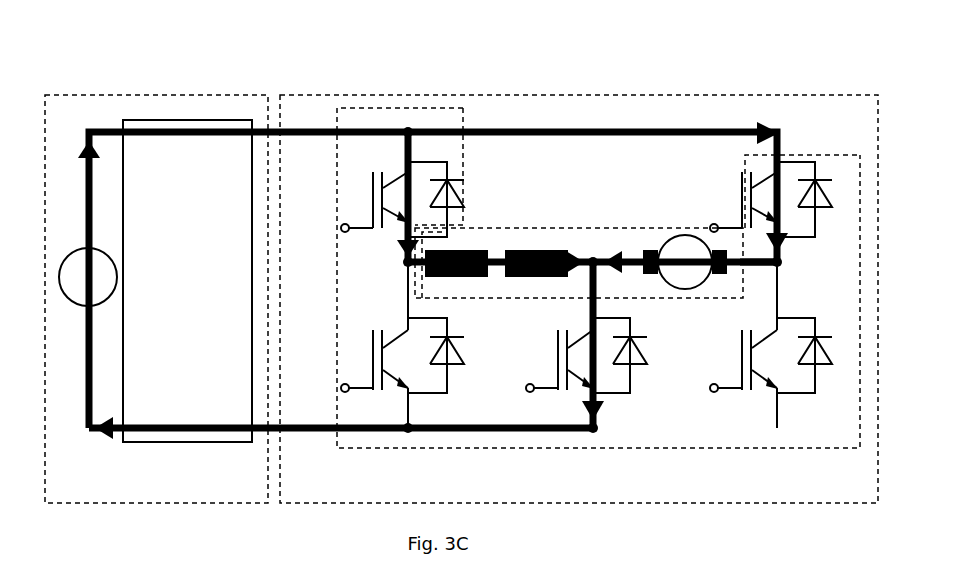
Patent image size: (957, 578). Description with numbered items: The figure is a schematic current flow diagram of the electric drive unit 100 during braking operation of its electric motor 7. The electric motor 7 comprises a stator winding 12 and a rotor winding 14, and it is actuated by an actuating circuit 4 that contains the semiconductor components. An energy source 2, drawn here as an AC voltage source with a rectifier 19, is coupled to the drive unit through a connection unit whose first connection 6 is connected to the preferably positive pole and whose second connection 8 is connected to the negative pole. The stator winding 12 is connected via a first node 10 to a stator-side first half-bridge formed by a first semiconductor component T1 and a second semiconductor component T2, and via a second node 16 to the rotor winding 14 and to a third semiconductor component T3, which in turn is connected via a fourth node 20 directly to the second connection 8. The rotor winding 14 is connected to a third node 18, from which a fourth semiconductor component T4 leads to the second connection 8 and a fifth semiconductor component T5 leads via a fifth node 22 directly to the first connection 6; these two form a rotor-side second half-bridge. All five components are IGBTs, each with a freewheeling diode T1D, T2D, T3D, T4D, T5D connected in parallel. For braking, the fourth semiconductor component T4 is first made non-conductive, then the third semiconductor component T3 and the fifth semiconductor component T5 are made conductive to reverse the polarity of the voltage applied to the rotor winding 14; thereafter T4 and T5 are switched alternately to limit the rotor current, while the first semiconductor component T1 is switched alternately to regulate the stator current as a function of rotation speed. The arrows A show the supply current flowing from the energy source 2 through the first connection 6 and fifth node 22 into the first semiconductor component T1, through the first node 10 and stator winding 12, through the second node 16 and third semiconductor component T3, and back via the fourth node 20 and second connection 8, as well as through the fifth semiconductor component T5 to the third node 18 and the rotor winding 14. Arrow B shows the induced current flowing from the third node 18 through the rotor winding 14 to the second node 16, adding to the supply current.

The energy source 2 is at (95, 95).
The rectifier 19 is at (190, 120).
The first connection 6 is at (317, 132).
The actuating circuit 4 is at (375, 108).
The fifth node 22 is at (410, 128).
The electric drive unit 100 is at (579, 269).
The electric motor 7 is at (672, 236).
The stator winding 12 is at (495, 232).
The rotor winding 14 is at (648, 246).
The second node 16 is at (590, 258).
The first node 10 is at (404, 262).
The third node 18 is at (782, 263).
The fourth node 20 is at (593, 432).
The second connection 8 is at (318, 432).
The first semiconductor component T1 is at (346, 196).
The second semiconductor component T2 is at (347, 361).
The third semiconductor component T3 is at (542, 361).
The fourth semiconductor component T4 is at (717, 363).
The fifth semiconductor component T5 is at (713, 197).
The freewheeling diode T1D is at (472, 184).
The freewheeling diode T2D is at (459, 378).
The freewheeling diode T3D is at (646, 378).
The freewheeling diode T4D is at (815, 410).
The freewheeling diode T5D is at (822, 150).
The arrows A is at (87, 235).
The arrow B is at (730, 270).